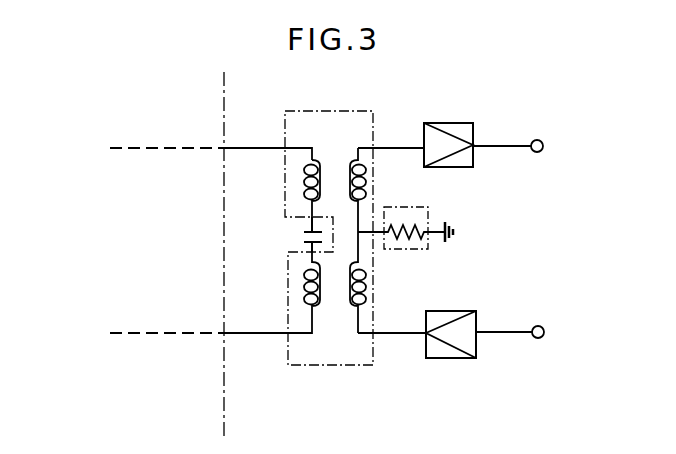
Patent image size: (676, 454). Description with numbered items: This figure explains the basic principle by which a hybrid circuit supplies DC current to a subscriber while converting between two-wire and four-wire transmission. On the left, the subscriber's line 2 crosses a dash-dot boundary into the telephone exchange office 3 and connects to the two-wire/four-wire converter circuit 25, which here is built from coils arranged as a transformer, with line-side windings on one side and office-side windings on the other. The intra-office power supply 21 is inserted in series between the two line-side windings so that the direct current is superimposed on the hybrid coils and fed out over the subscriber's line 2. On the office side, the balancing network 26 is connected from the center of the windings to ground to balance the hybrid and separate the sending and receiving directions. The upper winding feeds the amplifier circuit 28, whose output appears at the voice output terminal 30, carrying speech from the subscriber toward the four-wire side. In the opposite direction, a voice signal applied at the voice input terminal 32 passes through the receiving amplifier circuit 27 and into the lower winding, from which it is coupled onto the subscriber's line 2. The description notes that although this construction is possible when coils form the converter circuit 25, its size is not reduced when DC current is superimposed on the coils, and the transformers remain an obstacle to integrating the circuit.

The subscriber's line 2 is at (192, 254).
The telephone exchange office 3 is at (287, 412).
The intra-office power supply 21 is at (300, 237).
The two-wire/four-wire converter circuit 25 is at (350, 110).
The balancing network 26 is at (412, 207).
The receiving amplifier circuit 27 is at (450, 358).
The amplifier circuit 28 is at (447, 121).
The voice output terminal 30 is at (535, 140).
The voice input terminal 32 is at (540, 326).